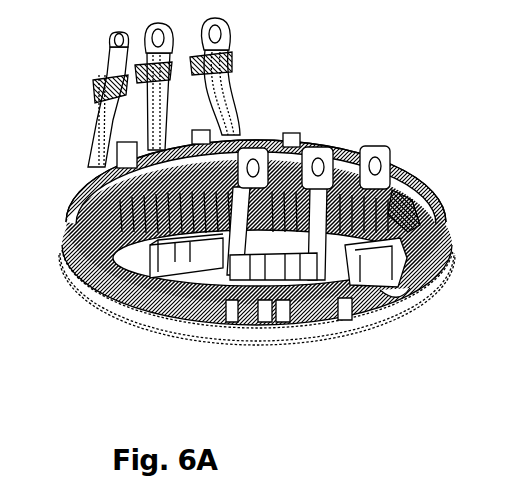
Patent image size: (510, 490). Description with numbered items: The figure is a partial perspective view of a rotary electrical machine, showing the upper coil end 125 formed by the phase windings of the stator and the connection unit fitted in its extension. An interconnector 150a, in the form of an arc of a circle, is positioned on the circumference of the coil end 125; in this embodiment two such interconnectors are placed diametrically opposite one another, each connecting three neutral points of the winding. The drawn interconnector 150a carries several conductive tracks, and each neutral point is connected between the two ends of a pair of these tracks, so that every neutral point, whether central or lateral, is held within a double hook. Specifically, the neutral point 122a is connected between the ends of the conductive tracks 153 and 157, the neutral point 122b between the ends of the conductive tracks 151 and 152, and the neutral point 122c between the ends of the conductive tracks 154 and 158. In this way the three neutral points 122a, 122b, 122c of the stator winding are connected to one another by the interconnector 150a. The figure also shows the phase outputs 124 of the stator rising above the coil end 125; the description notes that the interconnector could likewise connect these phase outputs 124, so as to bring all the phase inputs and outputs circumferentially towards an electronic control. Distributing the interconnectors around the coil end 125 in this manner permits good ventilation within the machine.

The phase outputs 124 is at (398, 197).
The upper coil end 125 is at (405, 206).
The neutral point 122a is at (167, 241).
The neutral point 122b is at (265, 321).
The neutral point 122c is at (425, 218).
The interconnector 150a is at (293, 267).
The conductive track 151 is at (232, 322).
The conductive track 152 is at (281, 323).
The conductive track 153 is at (167, 300).
The conductive track 154 is at (345, 322).
The conductive track 157 is at (93, 266).
The conductive track 158 is at (397, 303).